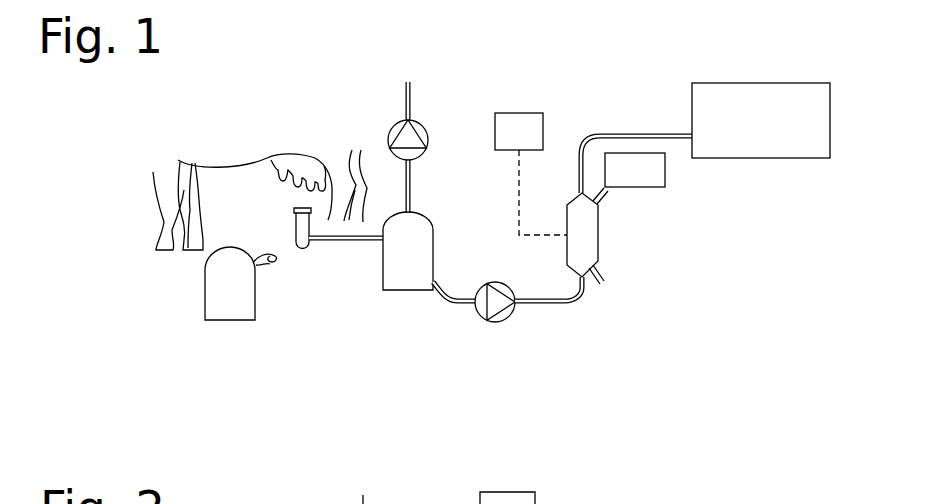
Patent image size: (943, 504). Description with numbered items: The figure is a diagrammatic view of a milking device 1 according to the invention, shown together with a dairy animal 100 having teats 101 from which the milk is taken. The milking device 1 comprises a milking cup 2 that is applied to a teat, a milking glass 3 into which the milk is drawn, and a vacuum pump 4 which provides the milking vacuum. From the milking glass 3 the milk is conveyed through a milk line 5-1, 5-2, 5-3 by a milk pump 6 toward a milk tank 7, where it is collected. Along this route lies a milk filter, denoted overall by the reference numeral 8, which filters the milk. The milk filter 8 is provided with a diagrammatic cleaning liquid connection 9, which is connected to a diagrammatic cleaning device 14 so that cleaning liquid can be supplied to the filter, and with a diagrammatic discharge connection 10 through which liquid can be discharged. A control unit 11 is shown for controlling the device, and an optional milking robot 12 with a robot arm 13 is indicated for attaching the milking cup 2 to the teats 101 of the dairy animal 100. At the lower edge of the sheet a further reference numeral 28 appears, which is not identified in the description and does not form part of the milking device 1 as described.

The dairy animal 100 is at (267, 147).
The teats 101 is at (273, 163).
The milking device 1 is at (662, 236).
The milking cup 2 is at (300, 227).
The milking glass 3 is at (412, 226).
The vacuum pump 4 is at (404, 133).
The milk line 5-1 is at (472, 302).
The milk line 5-2 is at (533, 302).
The milk line 5-3 is at (622, 137).
The milk pump 6 is at (495, 306).
The milk tank 7 is at (738, 98).
The milk filter 8 is at (560, 250).
The cleaning liquid connection 9 is at (595, 195).
The discharge connection 10 is at (600, 277).
The control unit 11 is at (223, 285).
The milking robot 12 is at (272, 266).
The robot arm 13 is at (514, 126).
The cleaning device 14 is at (660, 173).
The component of FIG. 2 28 is at (560, 503).